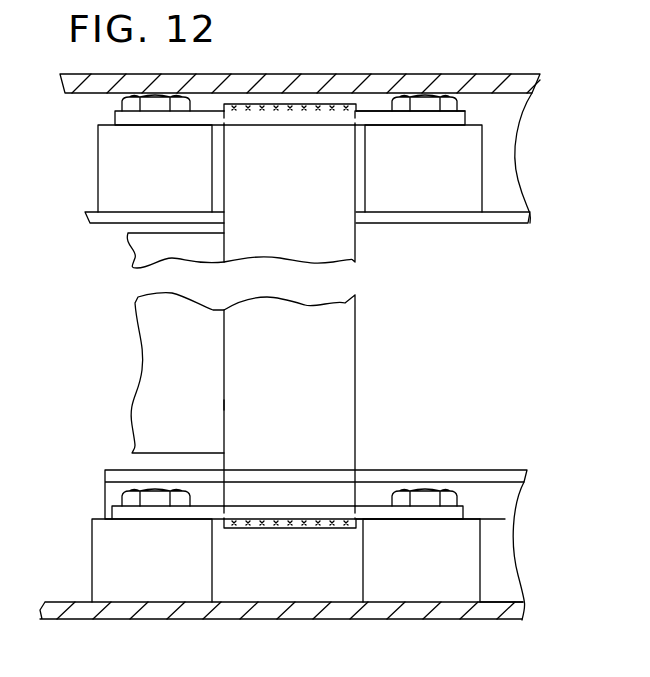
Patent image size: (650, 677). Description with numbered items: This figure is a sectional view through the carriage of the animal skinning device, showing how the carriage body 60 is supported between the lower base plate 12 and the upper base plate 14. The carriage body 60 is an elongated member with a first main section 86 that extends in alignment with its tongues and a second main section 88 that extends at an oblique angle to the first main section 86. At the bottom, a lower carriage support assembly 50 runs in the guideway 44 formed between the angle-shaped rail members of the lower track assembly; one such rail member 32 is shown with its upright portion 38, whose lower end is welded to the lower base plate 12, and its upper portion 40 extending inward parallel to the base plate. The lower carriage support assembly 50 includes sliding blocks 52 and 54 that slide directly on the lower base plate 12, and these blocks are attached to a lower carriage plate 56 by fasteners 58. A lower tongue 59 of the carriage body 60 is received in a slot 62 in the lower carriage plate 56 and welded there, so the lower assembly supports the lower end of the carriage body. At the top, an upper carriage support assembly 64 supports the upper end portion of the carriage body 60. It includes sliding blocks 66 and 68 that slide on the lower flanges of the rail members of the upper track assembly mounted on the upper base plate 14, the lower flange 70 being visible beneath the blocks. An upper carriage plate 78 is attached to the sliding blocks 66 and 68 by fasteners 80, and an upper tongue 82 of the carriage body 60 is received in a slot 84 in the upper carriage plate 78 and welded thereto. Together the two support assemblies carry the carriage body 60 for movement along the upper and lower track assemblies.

The lower base plate 12 is at (118, 612).
The upper base plate 14 is at (87, 84).
The rail member 32 is at (504, 469).
The upright portion 38 is at (507, 514).
The upper portion 40 is at (456, 478).
The guideway 44 is at (500, 603).
The lower carriage support assembly 50 is at (372, 505).
The sliding block 52 is at (117, 572).
The sliding block 54 is at (462, 578).
The lower carriage plate 56 is at (404, 514).
The fasteners 58 is at (130, 498).
The lower tongue 59 is at (330, 528).
The carriage body 60 is at (356, 405).
The slot 62 is at (223, 512).
The upper carriage support assembly 64 is at (398, 216).
The sliding block 66 is at (140, 176).
The sliding block 68 is at (440, 184).
The lower flange 70 is at (465, 221).
The upper carriage plate 78 is at (455, 124).
The fasteners 80 is at (163, 105).
The upper tongue 82 is at (295, 112).
The slot 84 is at (225, 119).
The first main section 86 is at (328, 362).
The second main section 88 is at (167, 343).